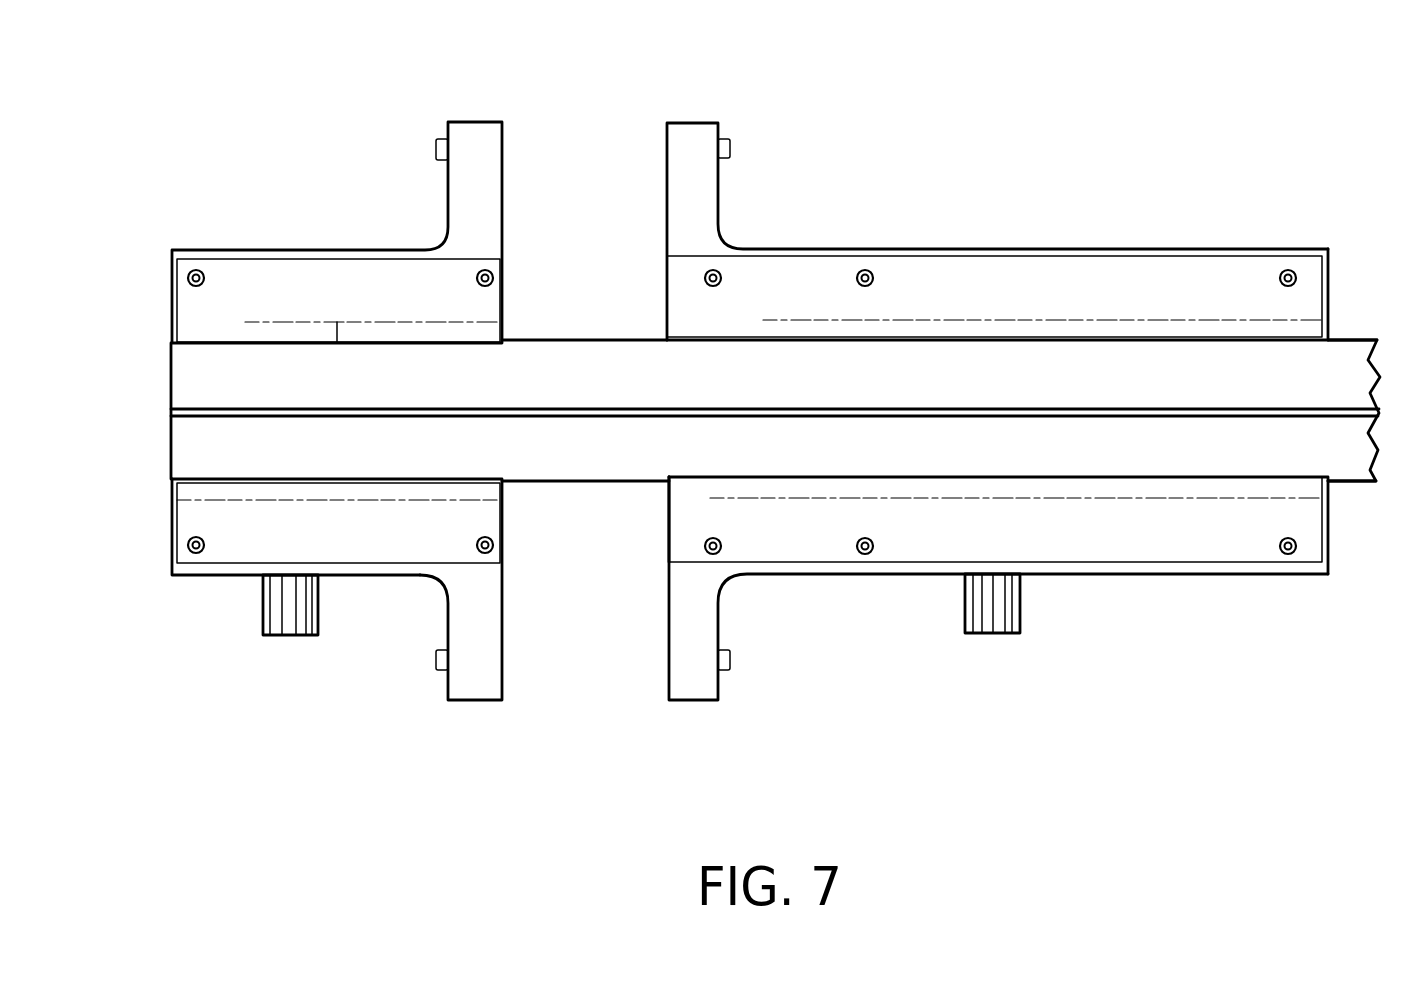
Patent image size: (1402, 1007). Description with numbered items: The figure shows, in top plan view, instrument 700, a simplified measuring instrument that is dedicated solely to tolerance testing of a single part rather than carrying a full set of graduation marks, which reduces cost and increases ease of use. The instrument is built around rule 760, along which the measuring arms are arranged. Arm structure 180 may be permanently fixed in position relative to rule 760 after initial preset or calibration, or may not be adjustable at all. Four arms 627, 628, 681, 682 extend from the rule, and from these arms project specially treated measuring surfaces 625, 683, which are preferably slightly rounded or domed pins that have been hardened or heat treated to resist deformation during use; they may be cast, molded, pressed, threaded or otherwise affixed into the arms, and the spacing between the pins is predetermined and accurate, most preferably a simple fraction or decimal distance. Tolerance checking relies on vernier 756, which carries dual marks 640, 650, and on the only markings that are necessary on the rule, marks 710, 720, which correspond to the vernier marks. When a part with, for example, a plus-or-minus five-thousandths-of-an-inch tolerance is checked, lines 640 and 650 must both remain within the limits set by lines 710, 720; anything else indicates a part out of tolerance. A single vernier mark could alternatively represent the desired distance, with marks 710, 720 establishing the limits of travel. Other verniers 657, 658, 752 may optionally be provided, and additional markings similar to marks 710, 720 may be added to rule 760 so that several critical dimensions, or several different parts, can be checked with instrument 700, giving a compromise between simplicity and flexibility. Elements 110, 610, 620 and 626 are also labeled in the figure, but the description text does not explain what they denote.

The instrument 700 is at (1143, 78).
The rail member 110 is at (1188, 575).
The arm structure 180 is at (413, 574).
The shaft 610 is at (775, 505).
The shaft seam 620 is at (775, 560).
The measuring surface 625 is at (730, 150).
The bracket edge 626 is at (667, 508).
The arm 627 is at (697, 682).
The arm 628 is at (675, 148).
The mark 640 is at (1272, 355).
The mark 650 is at (1068, 338).
The vernier 657 is at (232, 272).
The vernier 658 is at (240, 532).
The arm 681 is at (460, 692).
The arm 682 is at (468, 130).
The measuring surface 683 is at (437, 149).
The mark 710 is at (1063, 356).
The mark 720 is at (1267, 353).
The vernier 752 is at (1038, 550).
The vernier 756 is at (682, 293).
The rule 760 is at (578, 475).